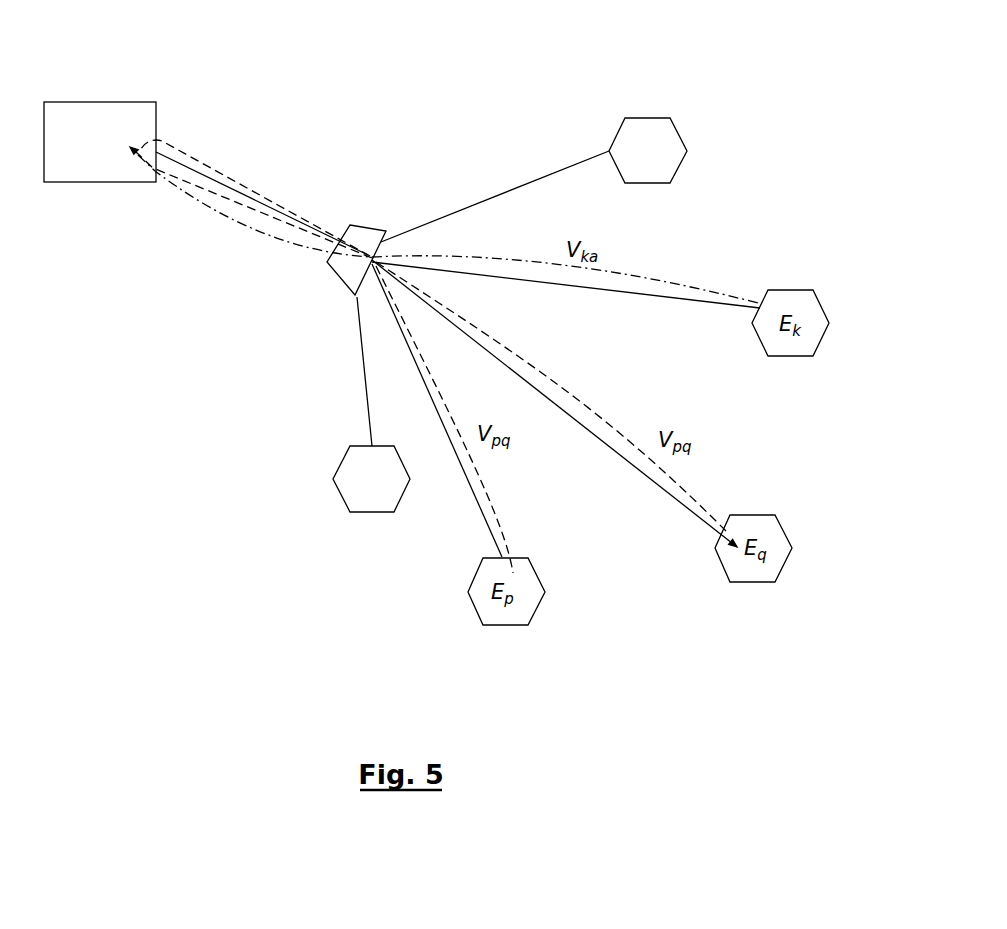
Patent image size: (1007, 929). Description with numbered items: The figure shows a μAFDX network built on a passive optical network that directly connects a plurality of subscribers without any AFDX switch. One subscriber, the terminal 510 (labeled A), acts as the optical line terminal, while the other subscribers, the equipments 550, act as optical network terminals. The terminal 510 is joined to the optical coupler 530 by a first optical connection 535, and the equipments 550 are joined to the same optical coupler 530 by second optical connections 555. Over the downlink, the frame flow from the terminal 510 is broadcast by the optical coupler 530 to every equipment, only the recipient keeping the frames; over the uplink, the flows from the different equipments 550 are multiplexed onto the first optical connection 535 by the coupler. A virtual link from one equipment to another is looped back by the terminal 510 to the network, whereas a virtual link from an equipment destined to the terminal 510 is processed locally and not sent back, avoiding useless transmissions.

The terminal 510 is at (72, 102).
The optical coupler 530 is at (368, 227).
The first optical connection 535 is at (210, 179).
The equipments 550 is at (653, 118).
The second optical connections 555 is at (365, 395).